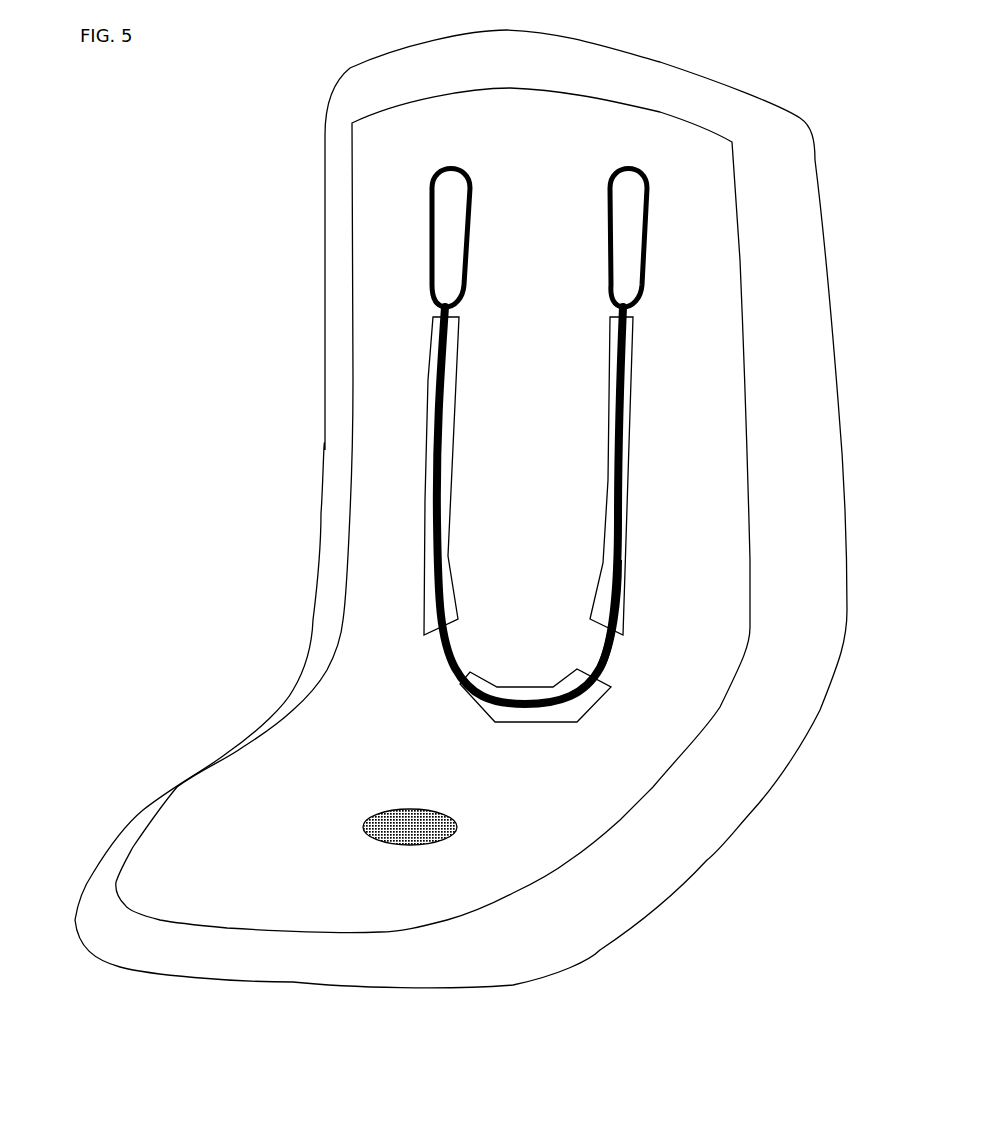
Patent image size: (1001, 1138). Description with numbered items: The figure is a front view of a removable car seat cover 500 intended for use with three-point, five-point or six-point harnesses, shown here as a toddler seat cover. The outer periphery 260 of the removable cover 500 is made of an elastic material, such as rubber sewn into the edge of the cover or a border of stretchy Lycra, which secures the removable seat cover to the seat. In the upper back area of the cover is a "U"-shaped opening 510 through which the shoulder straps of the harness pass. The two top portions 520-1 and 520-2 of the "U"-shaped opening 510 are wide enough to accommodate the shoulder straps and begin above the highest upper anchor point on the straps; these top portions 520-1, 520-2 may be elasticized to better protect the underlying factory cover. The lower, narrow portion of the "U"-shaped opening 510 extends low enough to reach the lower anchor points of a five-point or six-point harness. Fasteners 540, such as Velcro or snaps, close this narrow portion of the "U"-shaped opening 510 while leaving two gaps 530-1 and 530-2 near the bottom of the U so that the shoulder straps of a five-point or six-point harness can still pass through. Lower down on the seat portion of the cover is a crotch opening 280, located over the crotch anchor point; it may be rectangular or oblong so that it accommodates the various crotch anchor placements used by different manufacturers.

The periphery 260 is at (242, 985).
The removable car seat cover 500 is at (350, 722).
The crotch opening 280 is at (423, 828).
The "U"-shaped opening 510 is at (433, 385).
The top portion of "U"-shaped opening 520-1 is at (432, 227).
The top portion of "U"-shaped opening 520-2 is at (608, 228).
The gap 530-1 is at (460, 653).
The gap 530-2 is at (613, 662).
The fasteners 540 is at (608, 493).